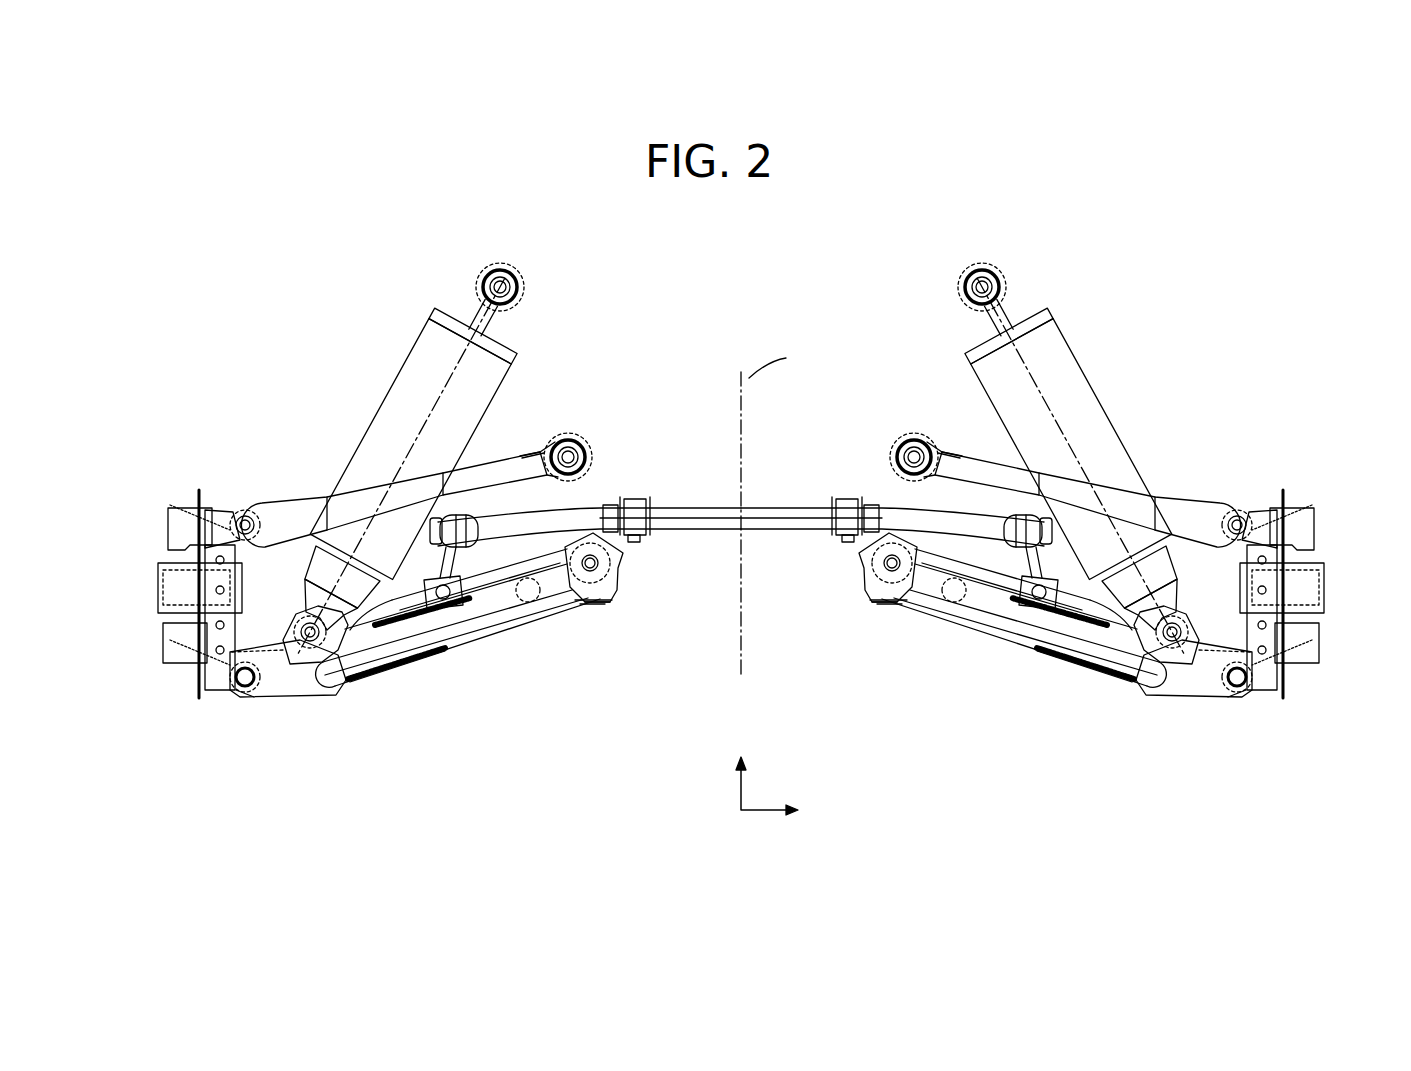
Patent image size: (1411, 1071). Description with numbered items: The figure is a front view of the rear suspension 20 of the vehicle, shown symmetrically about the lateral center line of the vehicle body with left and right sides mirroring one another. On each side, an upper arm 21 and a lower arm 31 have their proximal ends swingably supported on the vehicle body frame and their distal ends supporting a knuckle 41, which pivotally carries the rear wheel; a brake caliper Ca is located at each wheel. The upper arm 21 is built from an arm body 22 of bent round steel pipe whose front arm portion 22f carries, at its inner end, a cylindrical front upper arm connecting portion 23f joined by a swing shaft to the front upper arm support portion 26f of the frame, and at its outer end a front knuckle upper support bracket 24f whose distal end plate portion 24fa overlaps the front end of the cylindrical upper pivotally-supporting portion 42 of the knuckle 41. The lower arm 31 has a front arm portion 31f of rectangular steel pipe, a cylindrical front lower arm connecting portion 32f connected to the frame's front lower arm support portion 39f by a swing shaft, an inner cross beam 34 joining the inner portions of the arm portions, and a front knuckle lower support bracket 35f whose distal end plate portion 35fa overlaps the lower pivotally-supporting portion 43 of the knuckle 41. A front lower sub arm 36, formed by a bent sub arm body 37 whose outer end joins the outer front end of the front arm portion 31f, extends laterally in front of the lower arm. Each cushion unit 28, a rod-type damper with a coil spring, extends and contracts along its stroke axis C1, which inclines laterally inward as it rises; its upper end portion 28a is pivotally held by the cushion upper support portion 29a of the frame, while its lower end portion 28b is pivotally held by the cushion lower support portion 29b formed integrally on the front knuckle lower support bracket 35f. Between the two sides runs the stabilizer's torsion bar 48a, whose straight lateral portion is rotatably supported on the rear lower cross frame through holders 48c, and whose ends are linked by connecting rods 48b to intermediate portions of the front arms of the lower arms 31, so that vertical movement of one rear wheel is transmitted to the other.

The rear suspension 20 is at (993, 205).
The upper arm 21 is at (503, 463).
The arm body 22 is at (741, 455).
The front arm portion of the arm body 22f is at (530, 452).
The front upper arm connecting portion 23f is at (586, 440).
The front knuckle upper support bracket 24f is at (300, 500).
The distal end plate portion 24fa is at (238, 515).
The front upper arm support portion 26f is at (590, 455).
The cushion unit 28 is at (420, 343).
The upper end portion of the cushion unit 28a is at (487, 270).
The lower end portion of the cushion unit 28b is at (342, 680).
The cushion upper support portion 29a is at (507, 270).
The cushion lower support portion 29b is at (302, 615).
The lower arm 31 is at (479, 646).
The front arm portion of the lower arm 31f is at (508, 630).
The front lower arm connecting portion 32f is at (618, 585).
The inner cross beam 34 is at (535, 602).
The front knuckle lower support bracket 35f is at (300, 700).
The distal end plate portion 35fa is at (246, 698).
The front lower sub arm 36 is at (741, 666).
The sub arm body 37 is at (457, 635).
The front lower arm support portion 39f is at (598, 603).
The knuckle 41 is at (218, 688).
The upper pivotally-supporting portion 42 is at (252, 505).
The lower pivotally-supporting portion 43 is at (255, 692).
The torsion bar 48a is at (667, 512).
The connecting rod 48b is at (462, 556).
The holder 48c is at (650, 537).
The center axis (stroke axis) C1 is at (425, 410).
The brake caliper Ca is at (178, 578).